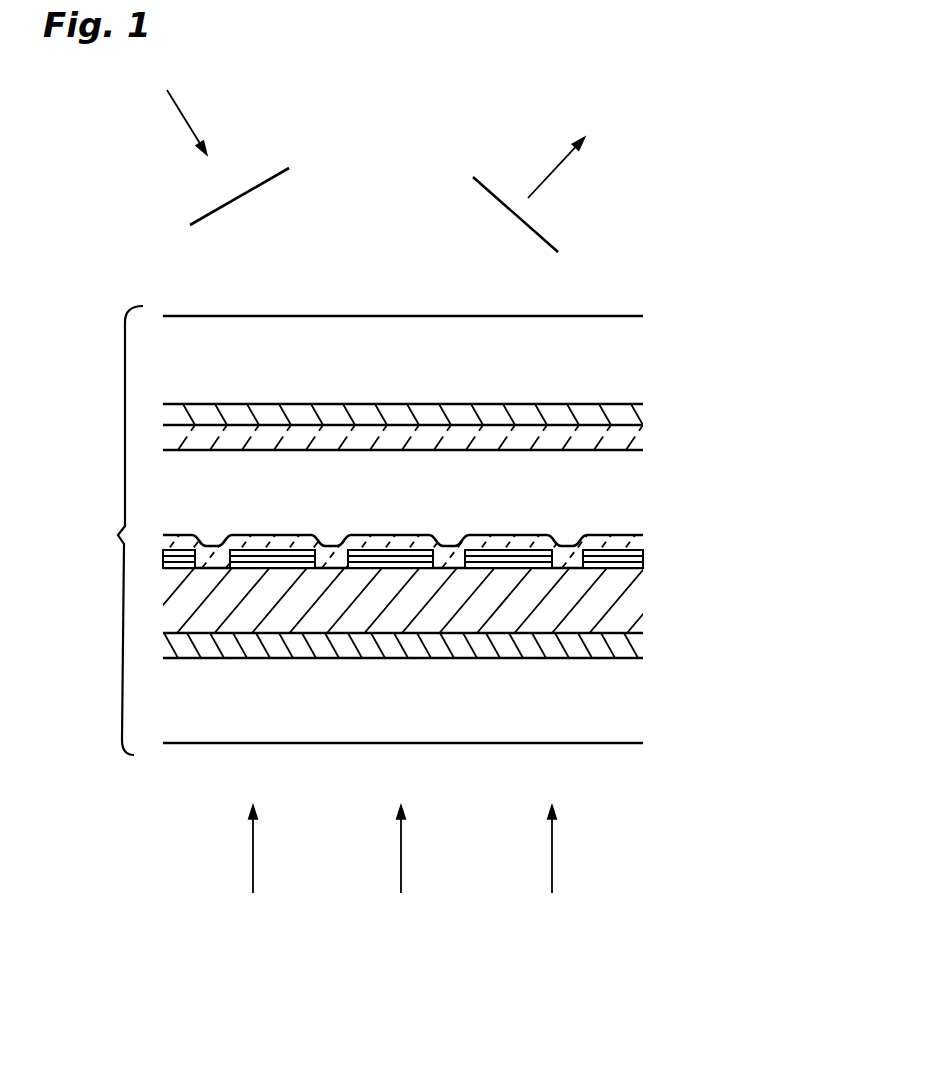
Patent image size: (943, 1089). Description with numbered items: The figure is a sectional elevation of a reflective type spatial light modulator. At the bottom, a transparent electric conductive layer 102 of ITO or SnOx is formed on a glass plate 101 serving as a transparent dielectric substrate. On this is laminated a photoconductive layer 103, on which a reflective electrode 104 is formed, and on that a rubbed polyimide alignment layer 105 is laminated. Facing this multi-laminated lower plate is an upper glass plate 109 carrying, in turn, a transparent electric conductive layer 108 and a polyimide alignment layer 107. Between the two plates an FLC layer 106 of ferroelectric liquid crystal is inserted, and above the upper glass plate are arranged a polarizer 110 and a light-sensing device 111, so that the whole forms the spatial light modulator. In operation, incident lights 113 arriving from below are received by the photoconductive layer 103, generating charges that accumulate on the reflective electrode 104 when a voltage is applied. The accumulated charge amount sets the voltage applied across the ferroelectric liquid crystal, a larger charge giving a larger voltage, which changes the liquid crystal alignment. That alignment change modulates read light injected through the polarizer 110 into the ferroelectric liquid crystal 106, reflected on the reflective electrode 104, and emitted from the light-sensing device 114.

The glass plate 101 is at (636, 704).
The transparent electric conductive layer 102 is at (637, 644).
The photoconductive layer 103 is at (632, 609).
The reflective electrode 104 is at (640, 561).
The alignment layer 105 is at (640, 545).
The FLC layer 106 is at (632, 496).
The polyimide alignment layer 107 is at (636, 440).
The transparent electric conductive layer 108 is at (632, 414).
The upper glass plate 109 is at (632, 363).
The polarizer 110 is at (198, 223).
The light-sensing device 111 is at (552, 297).
The incident lights 113 is at (574, 840).
The light-sensing device 114 is at (565, 92).